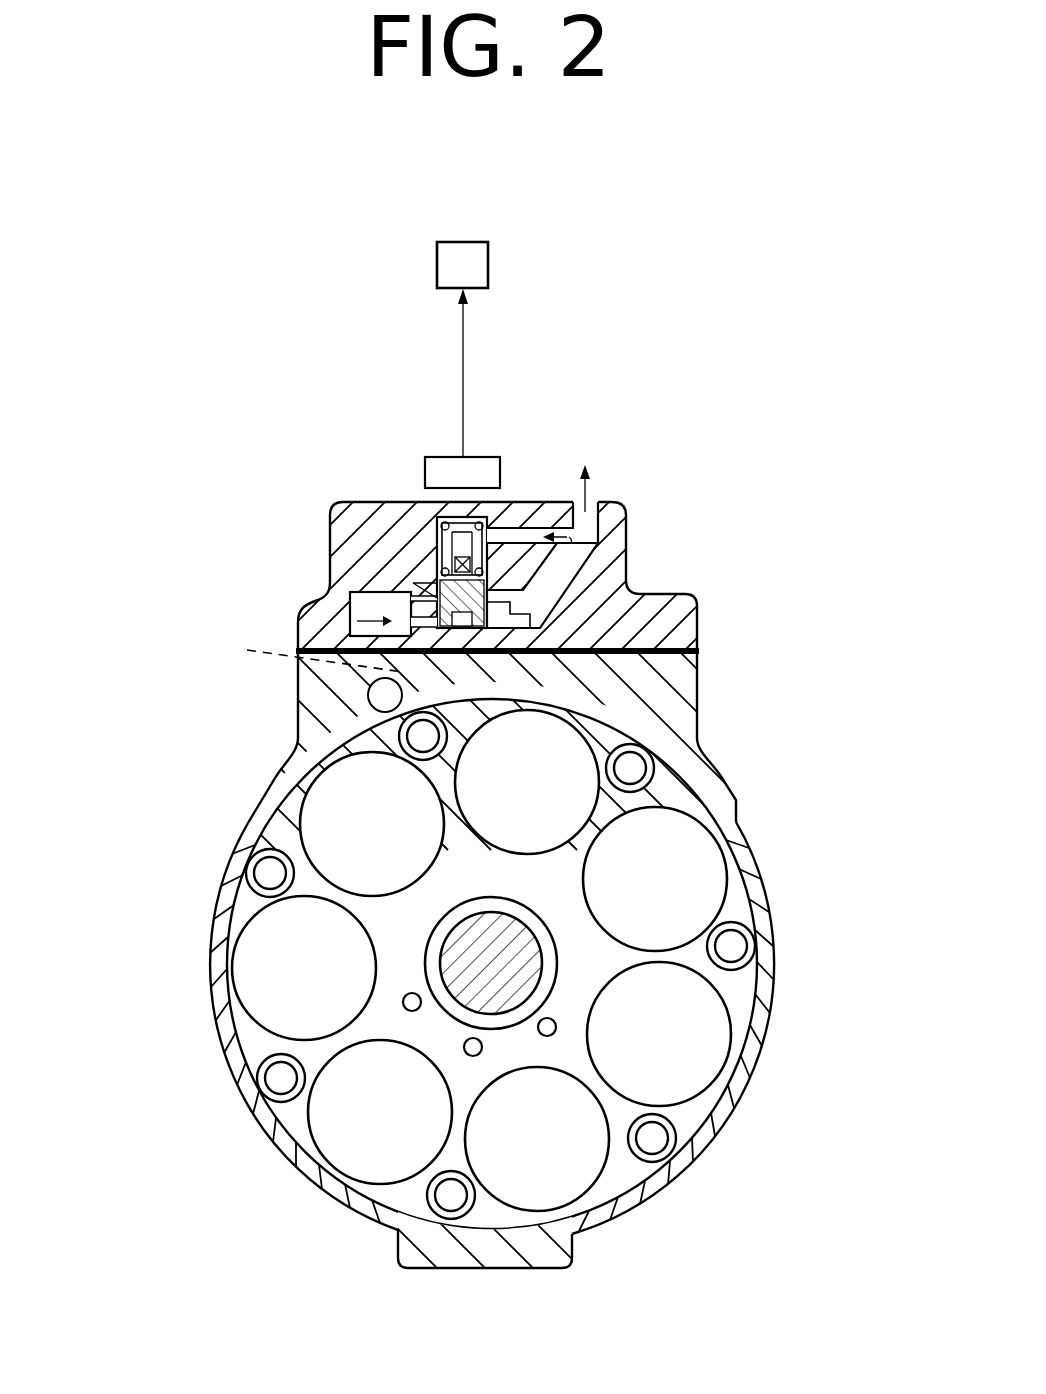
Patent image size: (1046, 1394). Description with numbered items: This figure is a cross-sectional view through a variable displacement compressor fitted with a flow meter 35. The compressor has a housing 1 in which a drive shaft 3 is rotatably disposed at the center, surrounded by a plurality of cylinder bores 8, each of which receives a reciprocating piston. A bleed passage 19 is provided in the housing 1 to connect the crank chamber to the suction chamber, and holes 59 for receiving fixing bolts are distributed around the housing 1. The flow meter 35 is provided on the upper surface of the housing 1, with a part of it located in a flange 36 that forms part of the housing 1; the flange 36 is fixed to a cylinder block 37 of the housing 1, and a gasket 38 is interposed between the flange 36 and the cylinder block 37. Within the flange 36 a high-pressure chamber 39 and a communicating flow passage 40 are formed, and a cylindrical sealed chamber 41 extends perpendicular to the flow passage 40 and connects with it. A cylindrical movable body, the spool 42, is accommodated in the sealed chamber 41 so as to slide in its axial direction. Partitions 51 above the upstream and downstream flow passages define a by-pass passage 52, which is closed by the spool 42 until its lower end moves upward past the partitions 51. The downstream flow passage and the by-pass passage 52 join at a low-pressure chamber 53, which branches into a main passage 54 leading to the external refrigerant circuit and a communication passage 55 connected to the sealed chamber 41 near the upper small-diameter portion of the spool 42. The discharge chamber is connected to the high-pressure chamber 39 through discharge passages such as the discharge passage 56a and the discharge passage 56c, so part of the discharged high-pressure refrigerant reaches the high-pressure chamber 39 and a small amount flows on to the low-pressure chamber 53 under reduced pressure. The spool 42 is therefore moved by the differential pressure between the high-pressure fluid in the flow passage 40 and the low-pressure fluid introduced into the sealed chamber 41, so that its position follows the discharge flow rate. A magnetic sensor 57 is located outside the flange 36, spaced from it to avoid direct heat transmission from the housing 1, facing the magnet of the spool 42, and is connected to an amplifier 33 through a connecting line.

The housing 1 is at (775, 940).
The drive shaft 3 is at (481, 974).
The cylinder bores 8 is at (382, 833).
The bleed passage 19 is at (403, 1002).
The amplifier 33 is at (473, 268).
The flow meter 35 is at (391, 414).
The flange 36 is at (353, 512).
The cylinder block 37 is at (700, 688).
The gasket 38 is at (705, 652).
The high-pressure chamber 39 is at (425, 605).
The flow passage 40 is at (350, 608).
The sealed chamber 41 is at (490, 520).
The spool 42 is at (425, 590).
The partitions 51 is at (560, 607).
The by-pass passage 52 is at (420, 590).
The low-pressure chamber 53 is at (575, 563).
The main passage 54 is at (596, 503).
The communication passage 55 is at (553, 530).
The discharge passage 56a is at (368, 696).
The discharge passage 56c is at (297, 651).
The magnetic sensor 57 is at (441, 470).
The holes 59 is at (255, 873).